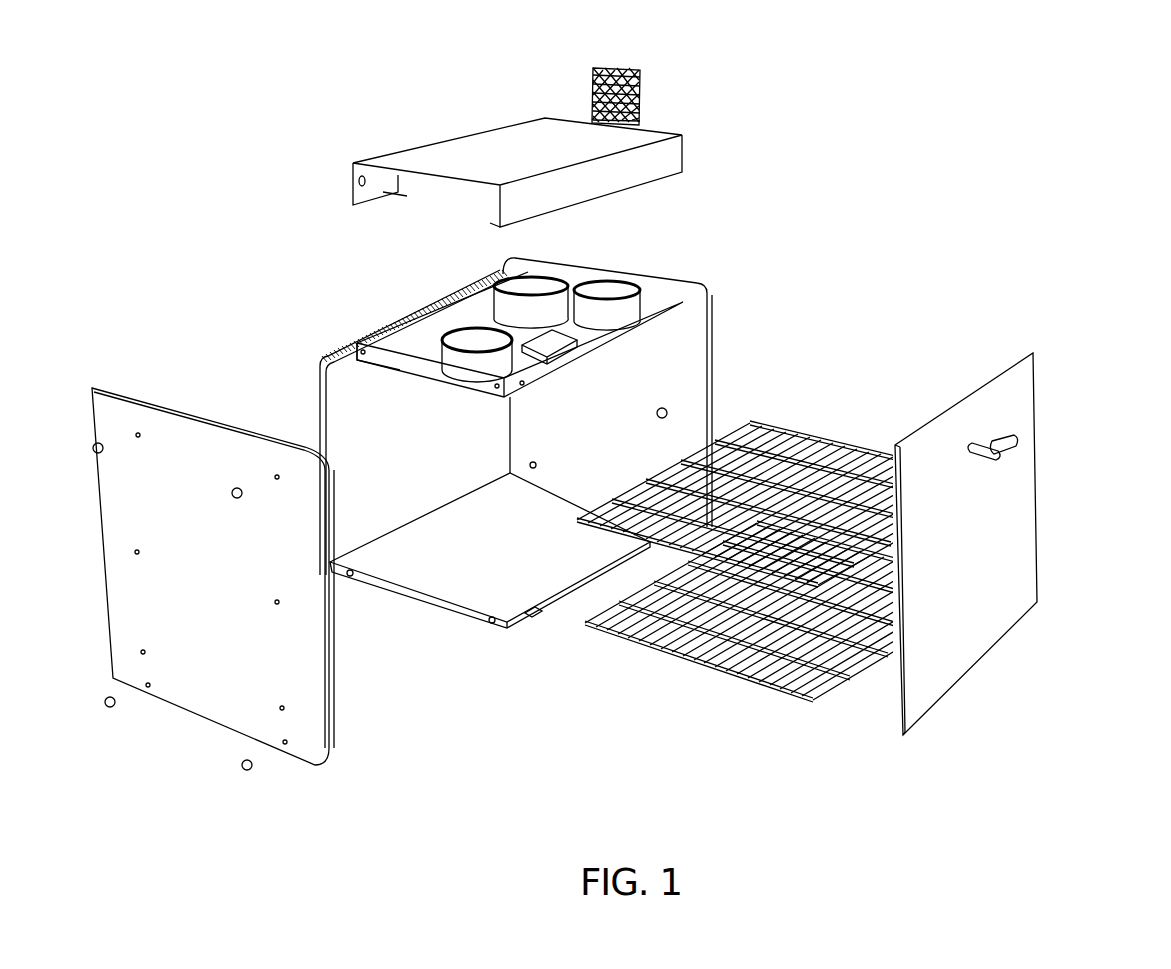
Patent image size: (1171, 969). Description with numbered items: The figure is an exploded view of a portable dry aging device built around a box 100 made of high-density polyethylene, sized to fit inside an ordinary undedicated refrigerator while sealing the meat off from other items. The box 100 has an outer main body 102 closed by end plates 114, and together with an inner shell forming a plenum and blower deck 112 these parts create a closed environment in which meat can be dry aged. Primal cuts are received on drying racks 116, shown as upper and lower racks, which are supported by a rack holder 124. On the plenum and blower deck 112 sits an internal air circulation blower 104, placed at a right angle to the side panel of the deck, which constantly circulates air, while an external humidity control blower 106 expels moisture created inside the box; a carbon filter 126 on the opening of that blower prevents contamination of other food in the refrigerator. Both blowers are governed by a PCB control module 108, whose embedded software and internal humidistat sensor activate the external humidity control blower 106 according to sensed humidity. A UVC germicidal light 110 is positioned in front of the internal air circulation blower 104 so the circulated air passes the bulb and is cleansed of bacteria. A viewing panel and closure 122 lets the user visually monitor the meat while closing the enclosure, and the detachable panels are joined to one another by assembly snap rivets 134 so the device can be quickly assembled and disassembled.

The box 100 is at (600, 437).
The outer main body 102 is at (313, 407).
The internal air circulation blower 104 is at (493, 290).
The external humidity control blower 106 is at (643, 293).
The PCB control module 108 is at (580, 348).
The UVC germicidal light 110 is at (445, 332).
The plenum and blower deck 112 is at (356, 351).
The end plates 114 is at (335, 688).
The drying racks 116 is at (750, 537).
The viewing panel and closure 122 is at (917, 708).
The rack holder 124 is at (667, 415).
The carbon filter 126 is at (640, 90).
The assembly snap rivets 134 is at (255, 766).